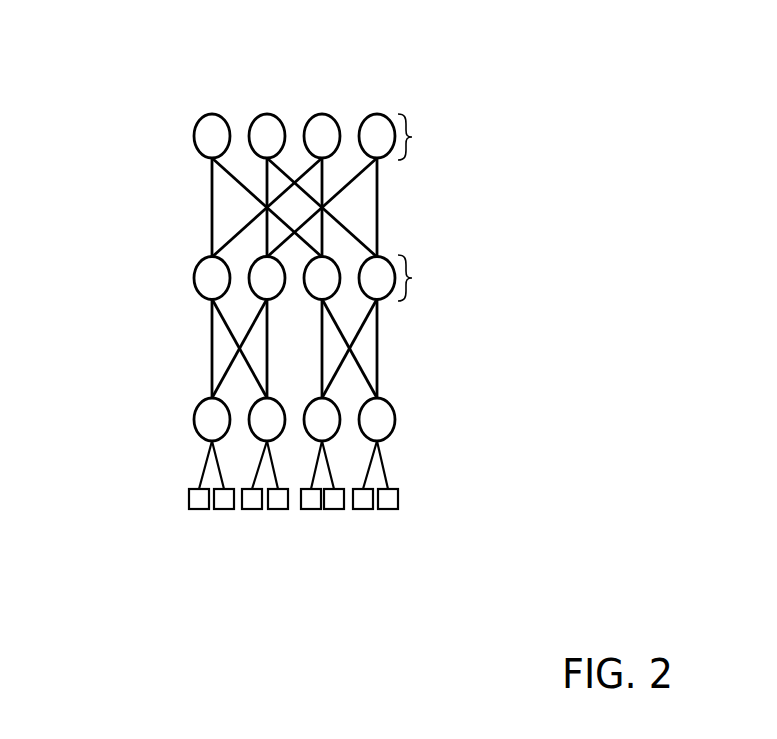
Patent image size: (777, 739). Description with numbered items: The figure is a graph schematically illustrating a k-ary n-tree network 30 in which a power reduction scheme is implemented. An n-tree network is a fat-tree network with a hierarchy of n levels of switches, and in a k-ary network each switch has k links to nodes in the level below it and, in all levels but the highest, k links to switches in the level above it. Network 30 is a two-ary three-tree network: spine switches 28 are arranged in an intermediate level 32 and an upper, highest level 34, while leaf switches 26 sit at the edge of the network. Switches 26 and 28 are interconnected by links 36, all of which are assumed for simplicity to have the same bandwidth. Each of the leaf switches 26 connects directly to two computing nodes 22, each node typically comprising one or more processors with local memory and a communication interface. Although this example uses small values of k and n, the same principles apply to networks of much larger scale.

The computing nodes 22 is at (199, 509).
The leaf switches 26 is at (263, 432).
The spine switches 28 is at (212, 115).
The k-ary n-tree network 30 is at (114, 112).
The intermediate level 32 is at (420, 278).
The upper level 34 is at (420, 137).
The links 36 is at (366, 243).